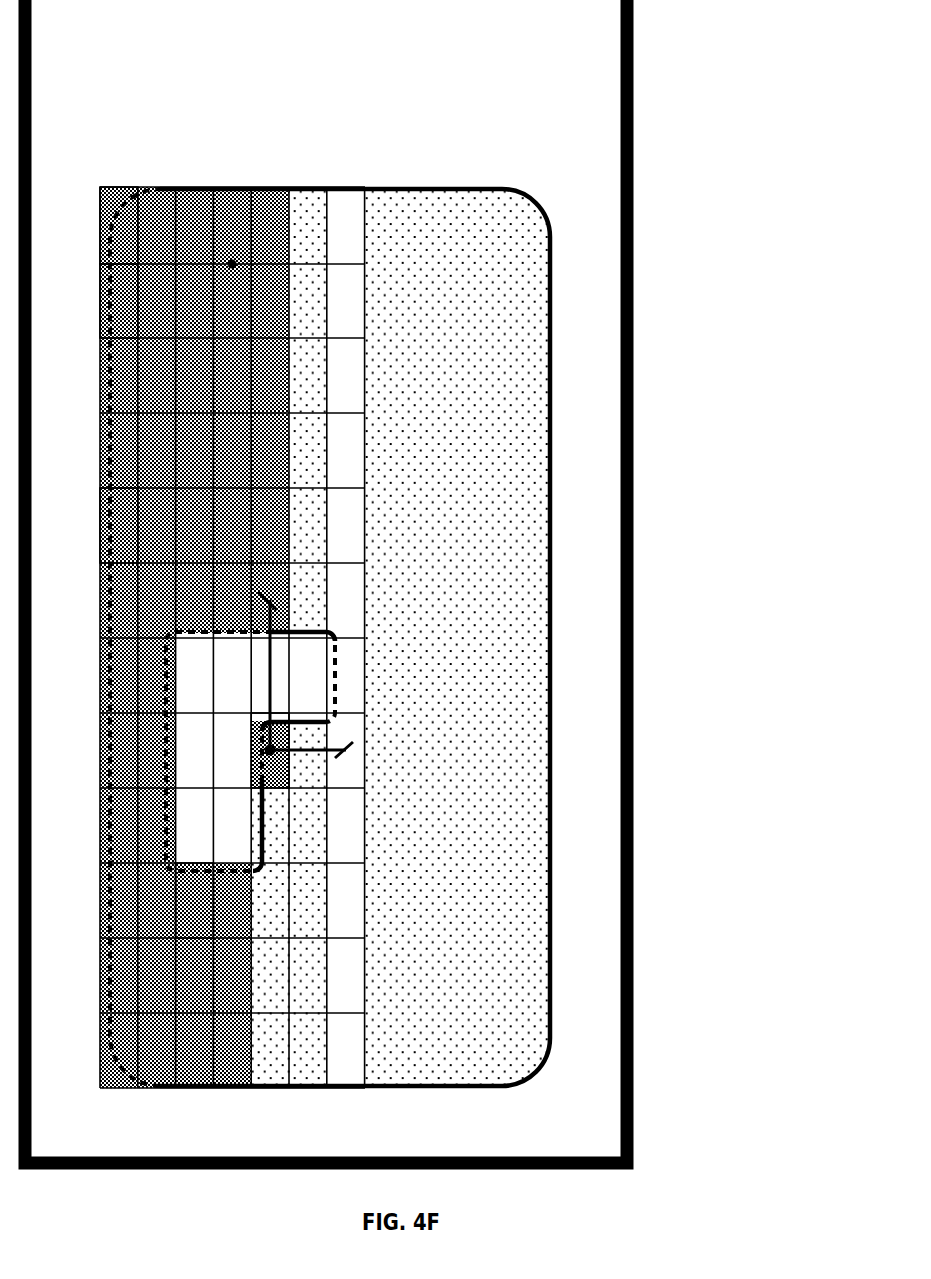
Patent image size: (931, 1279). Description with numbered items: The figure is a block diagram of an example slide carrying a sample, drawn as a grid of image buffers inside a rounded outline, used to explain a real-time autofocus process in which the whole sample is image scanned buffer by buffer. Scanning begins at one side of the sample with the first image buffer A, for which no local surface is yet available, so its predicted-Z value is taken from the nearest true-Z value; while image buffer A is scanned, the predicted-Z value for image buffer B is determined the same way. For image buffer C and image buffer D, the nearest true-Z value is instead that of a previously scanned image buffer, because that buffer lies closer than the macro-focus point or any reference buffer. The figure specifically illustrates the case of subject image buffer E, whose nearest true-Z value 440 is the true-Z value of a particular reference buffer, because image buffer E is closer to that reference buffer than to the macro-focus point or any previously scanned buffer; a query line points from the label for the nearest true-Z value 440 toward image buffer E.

The nearest true-Z value 440 is at (293, 735).
The image buffer A is at (119, 225).
The image buffer B is at (119, 301).
The image buffer C is at (119, 525).
The image buffer D is at (195, 900).
The image buffer E is at (270, 750).